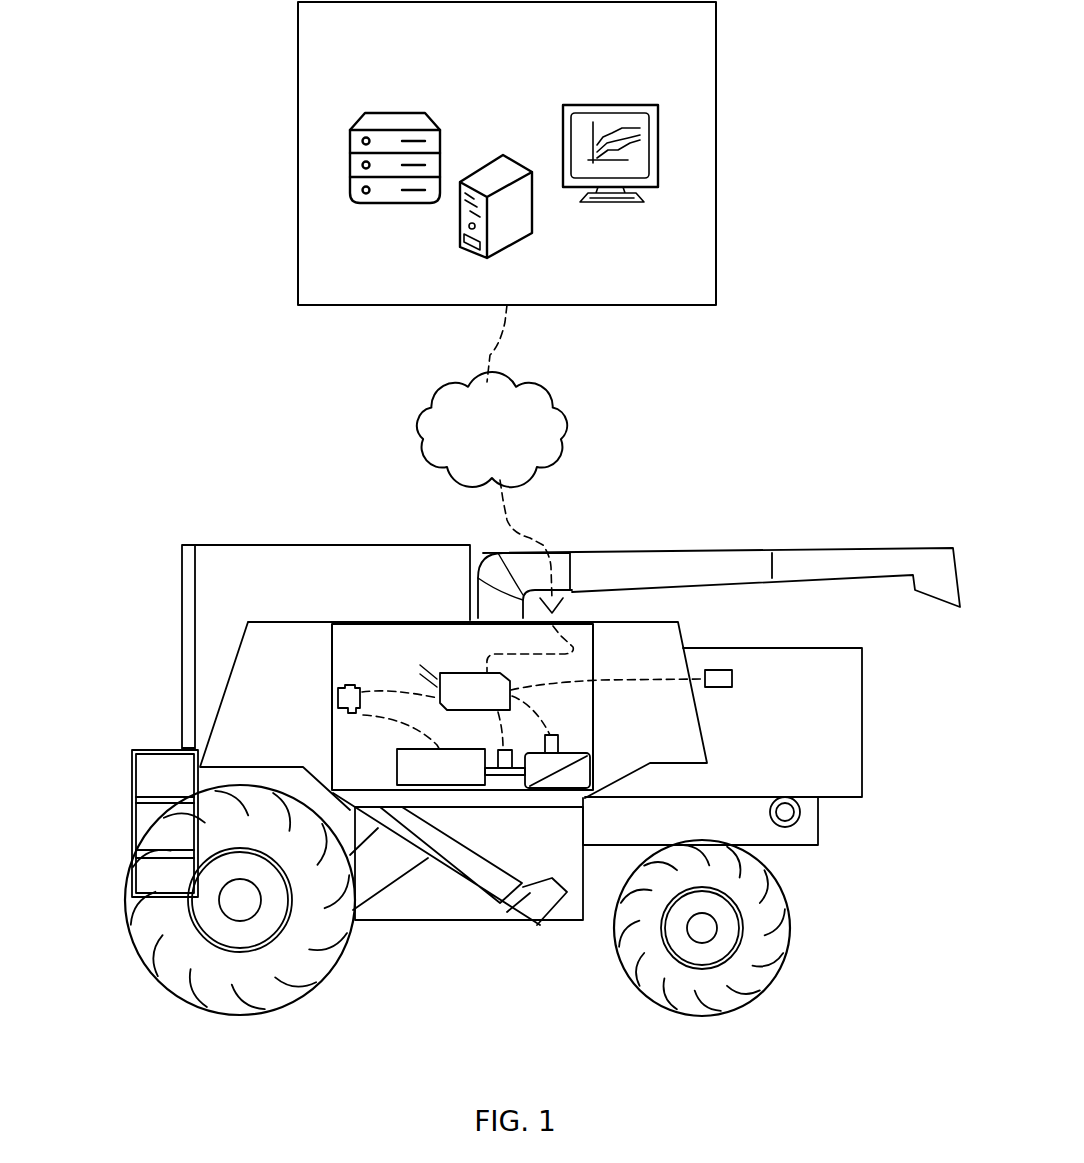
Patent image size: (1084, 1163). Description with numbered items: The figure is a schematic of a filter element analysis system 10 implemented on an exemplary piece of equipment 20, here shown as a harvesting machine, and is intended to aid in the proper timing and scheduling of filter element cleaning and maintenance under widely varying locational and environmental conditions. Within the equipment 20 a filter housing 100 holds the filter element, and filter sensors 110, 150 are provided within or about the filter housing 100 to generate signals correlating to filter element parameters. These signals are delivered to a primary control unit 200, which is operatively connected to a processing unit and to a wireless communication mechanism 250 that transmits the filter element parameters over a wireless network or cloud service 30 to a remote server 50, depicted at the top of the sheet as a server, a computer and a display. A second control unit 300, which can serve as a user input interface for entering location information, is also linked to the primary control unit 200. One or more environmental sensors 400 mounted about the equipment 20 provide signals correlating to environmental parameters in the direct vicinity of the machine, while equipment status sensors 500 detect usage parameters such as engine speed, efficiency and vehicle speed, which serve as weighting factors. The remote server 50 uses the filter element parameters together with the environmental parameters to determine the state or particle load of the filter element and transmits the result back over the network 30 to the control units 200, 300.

The filter element analysis system 10 is at (808, 975).
The vehicle or other equipment 20 is at (252, 682).
The wireless network or cloud service 30 is at (562, 431).
The remote server 50 is at (716, 200).
The filter housing 100 is at (570, 788).
The filter sensor 110 is at (558, 742).
The filter sensor 150 is at (505, 775).
The primary control unit 200 is at (457, 673).
The wireless communication mechanism 250 is at (558, 603).
The control unit 300 is at (347, 685).
The environmental sensor 400 is at (732, 680).
The equipment status sensor 500 is at (440, 785).